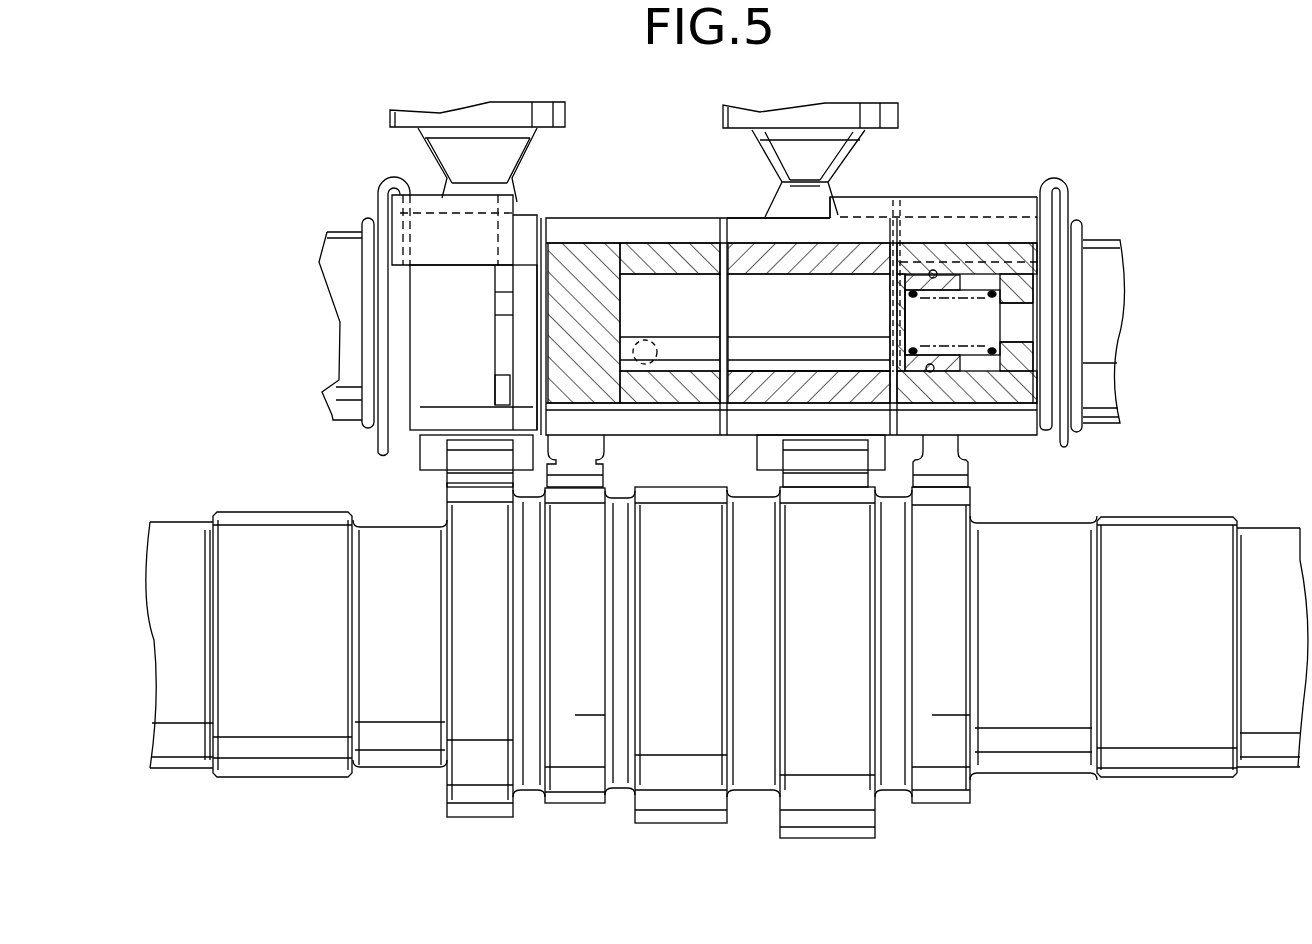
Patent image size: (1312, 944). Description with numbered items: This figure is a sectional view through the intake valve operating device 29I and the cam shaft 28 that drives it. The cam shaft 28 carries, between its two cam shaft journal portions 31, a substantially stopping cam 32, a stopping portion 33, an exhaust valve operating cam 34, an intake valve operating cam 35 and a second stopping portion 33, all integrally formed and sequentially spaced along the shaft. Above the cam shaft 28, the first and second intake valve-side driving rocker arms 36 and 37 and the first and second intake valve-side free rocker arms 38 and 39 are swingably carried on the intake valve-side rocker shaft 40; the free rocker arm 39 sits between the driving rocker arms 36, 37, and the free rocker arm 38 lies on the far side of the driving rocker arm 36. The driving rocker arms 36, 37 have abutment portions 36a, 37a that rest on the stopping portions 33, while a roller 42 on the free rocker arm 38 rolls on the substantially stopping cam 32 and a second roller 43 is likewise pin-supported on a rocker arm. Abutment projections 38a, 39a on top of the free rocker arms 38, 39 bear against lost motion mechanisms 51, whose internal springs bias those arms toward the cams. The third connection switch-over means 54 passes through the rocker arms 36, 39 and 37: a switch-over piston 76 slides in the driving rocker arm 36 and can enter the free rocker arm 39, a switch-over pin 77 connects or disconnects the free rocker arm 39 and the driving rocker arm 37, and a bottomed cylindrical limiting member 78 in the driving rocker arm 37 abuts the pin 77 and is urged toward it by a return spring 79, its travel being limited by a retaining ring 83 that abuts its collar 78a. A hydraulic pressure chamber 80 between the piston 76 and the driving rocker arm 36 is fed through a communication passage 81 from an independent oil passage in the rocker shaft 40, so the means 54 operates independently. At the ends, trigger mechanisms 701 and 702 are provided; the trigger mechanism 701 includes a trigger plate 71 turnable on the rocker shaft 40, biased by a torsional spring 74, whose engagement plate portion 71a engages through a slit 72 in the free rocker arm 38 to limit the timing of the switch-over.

The lost motion mechanism 51 is at (570, 104).
The abutment projection 39a is at (803, 193).
The abutment projection 38a is at (457, 193).
The first intake valve-side free rocker arm 38 is at (527, 232).
The communication passage 81 is at (598, 243).
The first intake valve-side driving rocker arm 36 is at (630, 243).
The hydraulic pressure chamber 80 is at (625, 290).
The second intake valve-side free rocker arm 39 is at (746, 235).
The second intake valve-side driving rocker arm 37 is at (917, 243).
The intake valve operating device 29I is at (935, 191).
The retaining ring 83 is at (937, 272).
The trigger mechanism 702 is at (1075, 187).
The intake valve-side rocker shaft 40 is at (1097, 245).
The trigger mechanism 701 is at (357, 233).
The trigger plate 71 is at (392, 297).
The engagement plate portion 71a is at (505, 280).
The slit 72 is at (500, 308).
The torsional spring 74 is at (366, 350).
The switch-over piston 76 is at (656, 325).
The switch-over pin 77 is at (796, 325).
The return spring 79 is at (995, 345).
The collar 78a is at (948, 365).
The limiting member 78 is at (928, 372).
The roller 42 is at (450, 472).
The abutment portion 36a is at (592, 456).
The roller 43 is at (820, 470).
The abutment portion 37a is at (942, 465).
The third connection switch-over means 54 is at (770, 372).
The cam shaft 28 is at (1268, 540).
The cam shaft journal portion 31 is at (256, 652).
The substantially stopping cam 32 is at (458, 655).
The stopping portion 33 is at (552, 657).
The exhaust valve operating cam 34 is at (658, 657).
The intake valve operating cam 35 is at (806, 657).